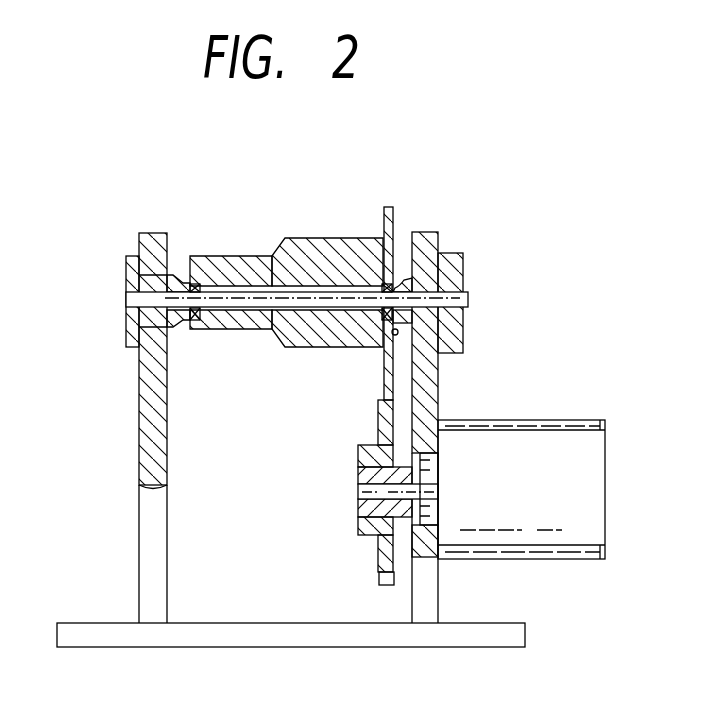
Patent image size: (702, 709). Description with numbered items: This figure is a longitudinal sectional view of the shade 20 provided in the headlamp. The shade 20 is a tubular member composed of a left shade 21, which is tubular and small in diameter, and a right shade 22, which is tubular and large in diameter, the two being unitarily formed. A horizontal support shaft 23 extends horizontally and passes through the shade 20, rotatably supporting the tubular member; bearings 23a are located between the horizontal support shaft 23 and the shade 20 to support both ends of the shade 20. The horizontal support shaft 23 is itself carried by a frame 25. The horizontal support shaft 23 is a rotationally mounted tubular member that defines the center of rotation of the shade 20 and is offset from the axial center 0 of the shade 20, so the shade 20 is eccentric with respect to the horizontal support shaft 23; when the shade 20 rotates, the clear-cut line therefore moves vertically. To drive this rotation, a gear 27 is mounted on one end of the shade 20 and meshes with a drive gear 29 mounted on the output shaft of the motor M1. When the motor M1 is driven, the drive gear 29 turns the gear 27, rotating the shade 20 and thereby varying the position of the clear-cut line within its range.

The shade 20 is at (286, 240).
The left shade 21 is at (253, 256).
The right shade 22 is at (327, 266).
The horizontal support shaft 23 is at (130, 300).
The bearings 23a is at (190, 284).
The frame 25 is at (147, 243).
The gear 27 is at (388, 208).
The drive gear 29 is at (383, 573).
The axial center 0 is at (329, 300).
The motor M1 is at (560, 420).